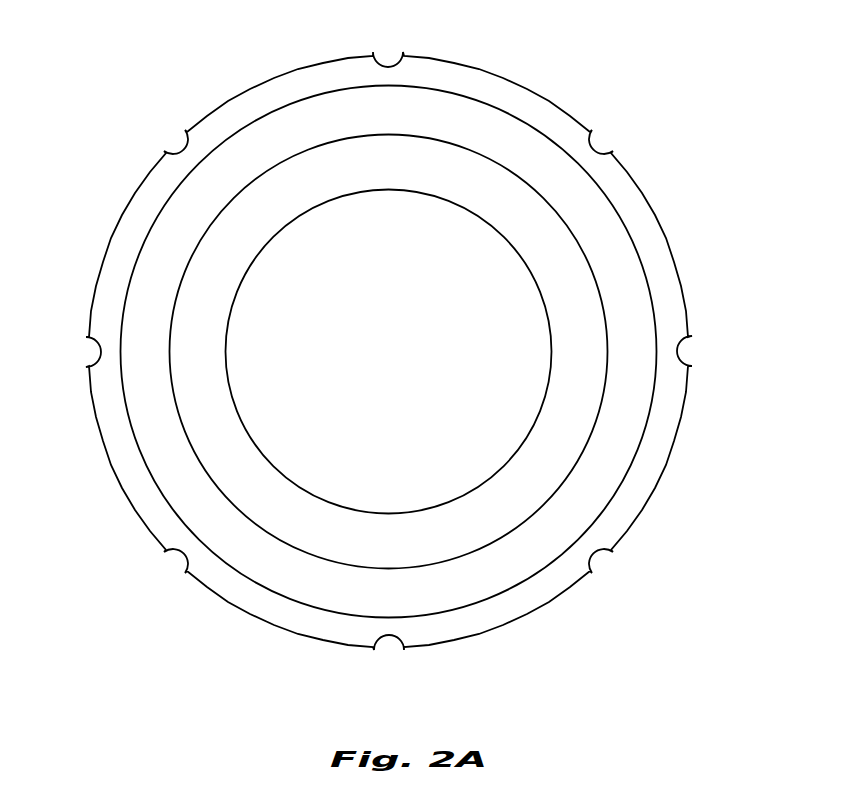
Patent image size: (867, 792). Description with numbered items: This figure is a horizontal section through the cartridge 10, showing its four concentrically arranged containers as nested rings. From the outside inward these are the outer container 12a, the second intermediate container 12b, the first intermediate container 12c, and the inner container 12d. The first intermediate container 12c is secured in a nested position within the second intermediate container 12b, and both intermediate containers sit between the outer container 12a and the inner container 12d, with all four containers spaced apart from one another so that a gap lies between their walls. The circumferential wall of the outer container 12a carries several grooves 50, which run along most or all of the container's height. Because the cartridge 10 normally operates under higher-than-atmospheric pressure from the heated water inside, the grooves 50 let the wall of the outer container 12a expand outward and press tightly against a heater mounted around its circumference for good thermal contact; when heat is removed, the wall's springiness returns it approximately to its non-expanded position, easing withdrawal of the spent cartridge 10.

The cartridge 10 is at (686, 76).
The outer container 12a is at (517, 80).
The second intermediate container 12b is at (165, 197).
The first intermediate container 12c is at (215, 220).
The inner container 12d is at (285, 478).
The grooves 50 is at (390, 65).